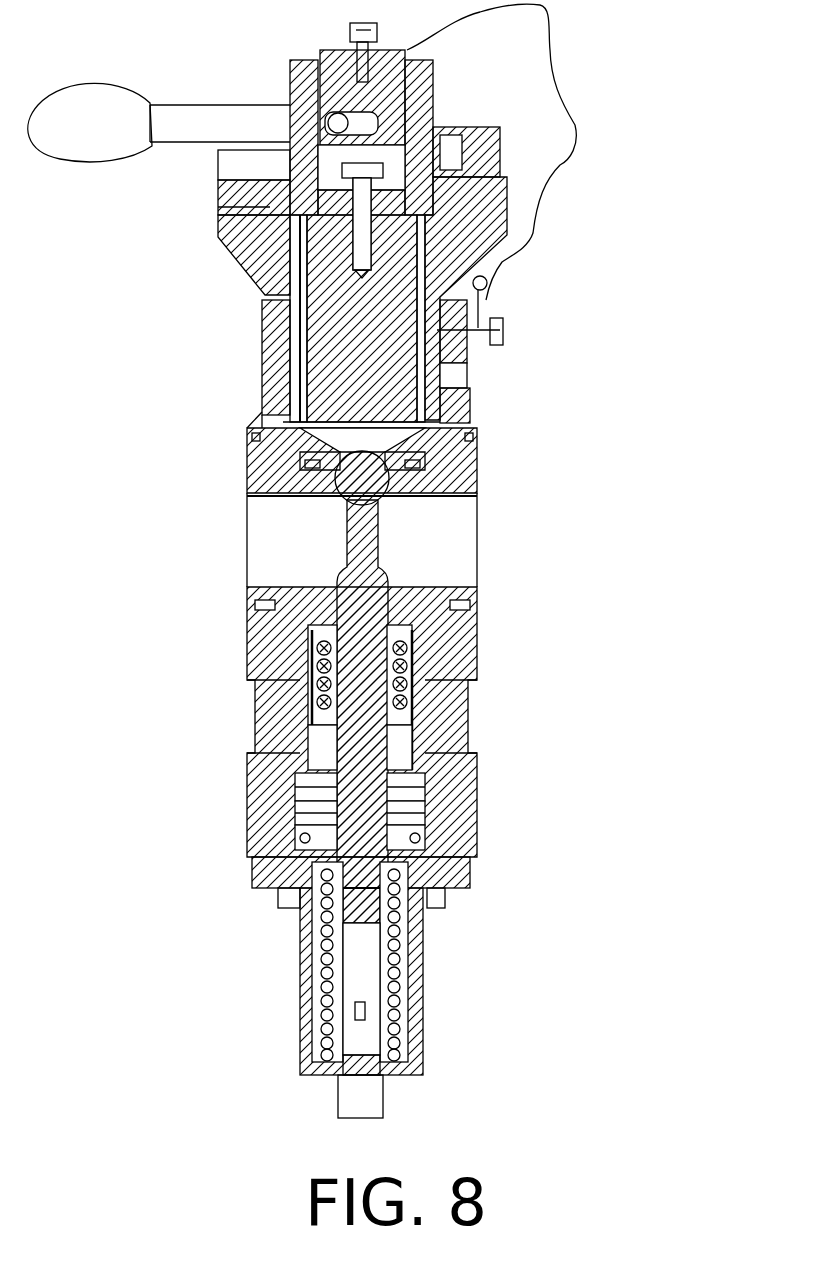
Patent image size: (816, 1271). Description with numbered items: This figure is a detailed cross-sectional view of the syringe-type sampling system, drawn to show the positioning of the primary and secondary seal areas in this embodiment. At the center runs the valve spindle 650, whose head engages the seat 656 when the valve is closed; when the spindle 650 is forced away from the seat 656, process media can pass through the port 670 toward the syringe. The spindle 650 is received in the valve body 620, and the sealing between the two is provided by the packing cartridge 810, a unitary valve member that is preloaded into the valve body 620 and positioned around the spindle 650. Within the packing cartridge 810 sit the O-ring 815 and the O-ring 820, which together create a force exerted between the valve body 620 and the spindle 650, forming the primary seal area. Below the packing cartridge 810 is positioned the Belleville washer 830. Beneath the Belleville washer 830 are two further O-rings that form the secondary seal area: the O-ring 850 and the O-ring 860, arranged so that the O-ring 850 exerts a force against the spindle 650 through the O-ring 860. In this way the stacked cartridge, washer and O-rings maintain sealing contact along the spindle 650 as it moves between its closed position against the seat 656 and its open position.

The valve body 620 is at (468, 760).
The valve spindle 650 is at (477, 450).
The seat 656 is at (292, 455).
The port 670 is at (495, 572).
The packing cartridge 810 is at (412, 672).
The O-ring 815 is at (300, 715).
The O-ring 820 is at (300, 640).
The Belleville washer 830 is at (300, 780).
The O-ring 850 is at (300, 832).
The O-ring 860 is at (300, 820).